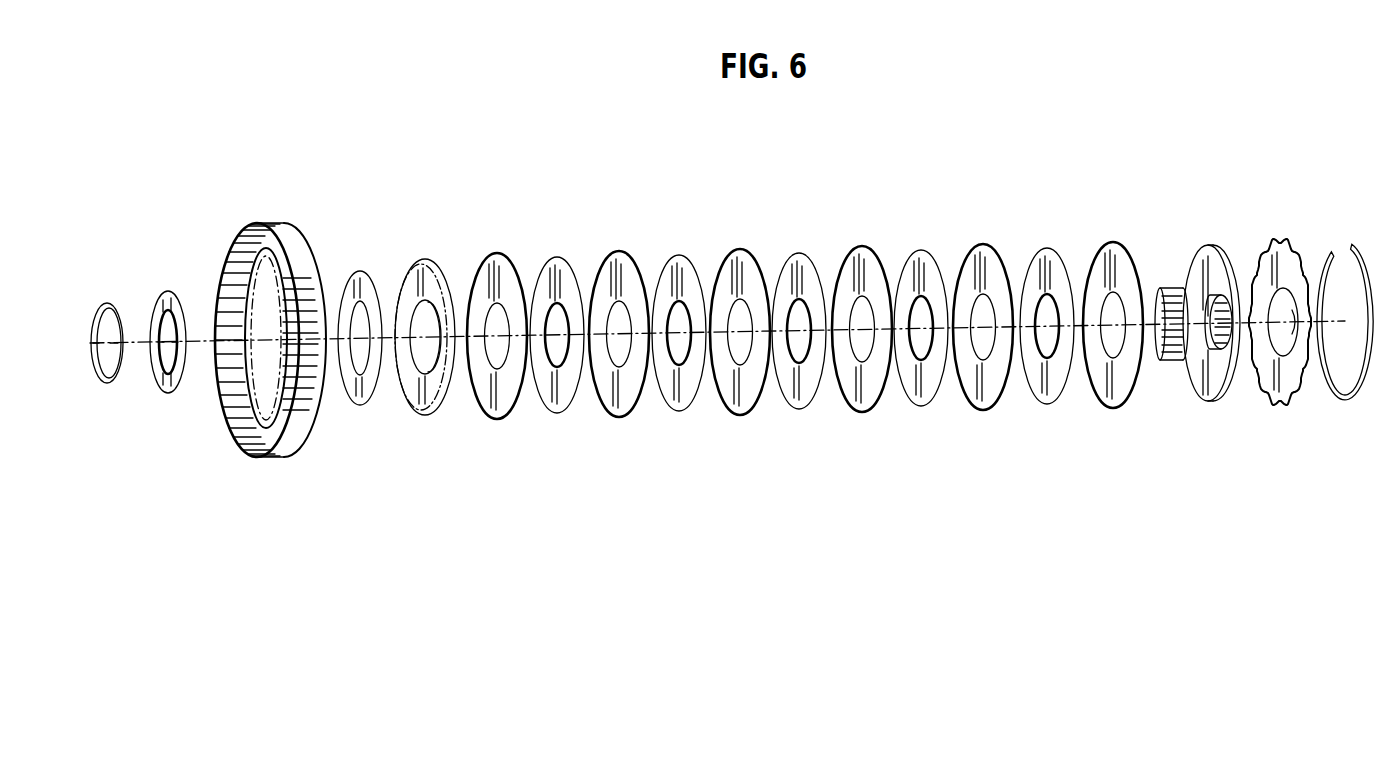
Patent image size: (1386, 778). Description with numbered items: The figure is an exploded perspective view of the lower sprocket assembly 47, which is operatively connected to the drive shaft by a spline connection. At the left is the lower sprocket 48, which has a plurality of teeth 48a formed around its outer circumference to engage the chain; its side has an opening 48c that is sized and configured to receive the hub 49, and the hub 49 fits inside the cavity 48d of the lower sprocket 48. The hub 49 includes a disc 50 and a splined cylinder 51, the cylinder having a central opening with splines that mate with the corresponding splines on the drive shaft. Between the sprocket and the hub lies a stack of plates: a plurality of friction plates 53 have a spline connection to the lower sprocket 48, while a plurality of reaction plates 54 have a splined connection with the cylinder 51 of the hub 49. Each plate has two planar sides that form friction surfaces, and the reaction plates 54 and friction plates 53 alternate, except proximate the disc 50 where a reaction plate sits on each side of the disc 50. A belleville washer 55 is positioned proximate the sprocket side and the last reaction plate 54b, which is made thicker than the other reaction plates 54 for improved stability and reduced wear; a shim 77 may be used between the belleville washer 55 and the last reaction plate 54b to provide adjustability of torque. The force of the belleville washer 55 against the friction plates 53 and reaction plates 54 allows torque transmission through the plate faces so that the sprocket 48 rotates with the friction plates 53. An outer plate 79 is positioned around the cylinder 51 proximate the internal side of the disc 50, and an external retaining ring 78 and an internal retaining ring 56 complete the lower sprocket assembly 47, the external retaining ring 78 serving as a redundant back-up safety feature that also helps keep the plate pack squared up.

The lower sprocket assembly 47 is at (791, 592).
The lower sprocket 48 is at (272, 344).
The teeth 48a is at (227, 278).
The opening 48c is at (268, 340).
The cavity 48d is at (283, 290).
The hub 49 is at (1206, 330).
The disc 50 is at (1214, 246).
The splined cylinder 51 is at (1170, 289).
The friction plates 53 is at (497, 420).
The reaction plates 54 is at (553, 415).
The last reaction plate 54b is at (163, 392).
The belleville washer 55 is at (423, 418).
The internal retaining ring 56 is at (1348, 398).
The shim 77 is at (357, 402).
The external retaining ring 78 is at (108, 380).
The outer plate 79 is at (1277, 404).